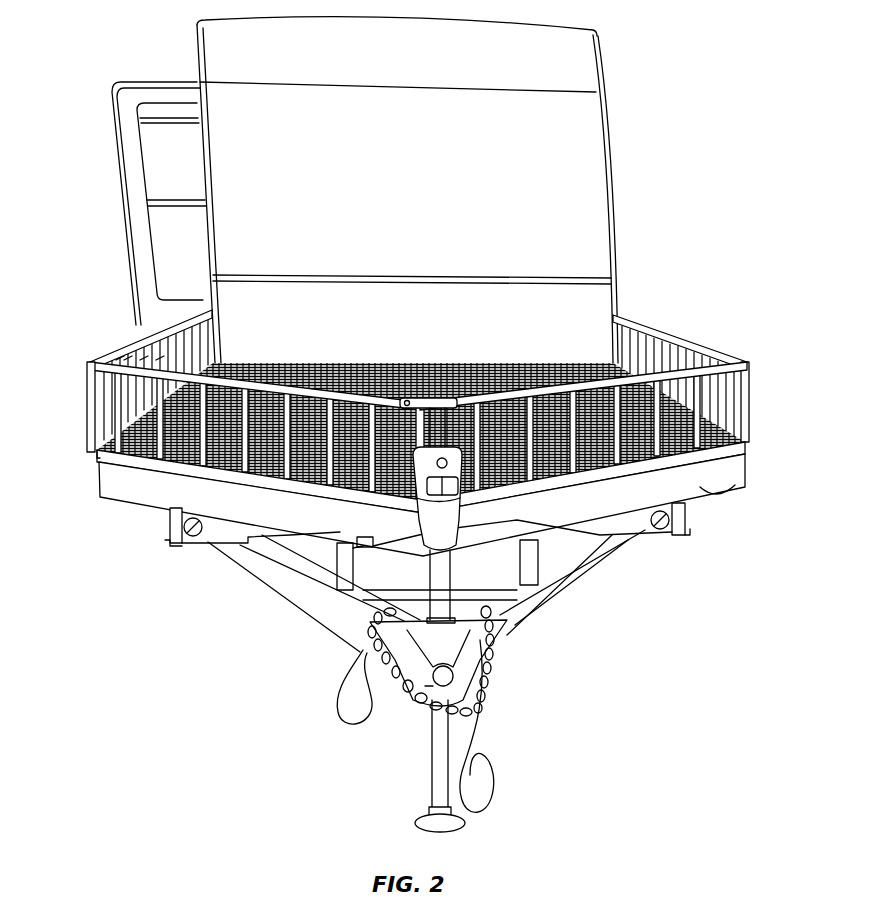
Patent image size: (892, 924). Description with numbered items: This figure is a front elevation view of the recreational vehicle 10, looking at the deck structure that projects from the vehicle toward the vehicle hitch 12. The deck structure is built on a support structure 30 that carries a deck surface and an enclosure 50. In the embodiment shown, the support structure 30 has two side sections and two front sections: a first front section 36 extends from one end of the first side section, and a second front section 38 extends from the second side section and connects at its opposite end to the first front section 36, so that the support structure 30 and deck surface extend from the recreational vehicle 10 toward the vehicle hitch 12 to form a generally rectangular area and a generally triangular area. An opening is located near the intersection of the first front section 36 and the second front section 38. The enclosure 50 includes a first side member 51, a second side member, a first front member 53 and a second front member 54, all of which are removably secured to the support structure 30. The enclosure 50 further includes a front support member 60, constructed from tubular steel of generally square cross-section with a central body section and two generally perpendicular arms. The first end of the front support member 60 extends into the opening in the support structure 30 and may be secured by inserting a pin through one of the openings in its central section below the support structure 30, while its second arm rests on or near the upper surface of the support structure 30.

The recreational vehicle 10 is at (410, 175).
The vehicle hitch 12 is at (446, 716).
The support structure 30 is at (676, 548).
The first front section 36 is at (245, 497).
The second front section 38 is at (557, 518).
The enclosure 50 is at (744, 412).
The first side member 51 is at (116, 340).
The first front member 53 is at (183, 470).
The second front member 54 is at (616, 474).
The front support member 60 is at (451, 430).